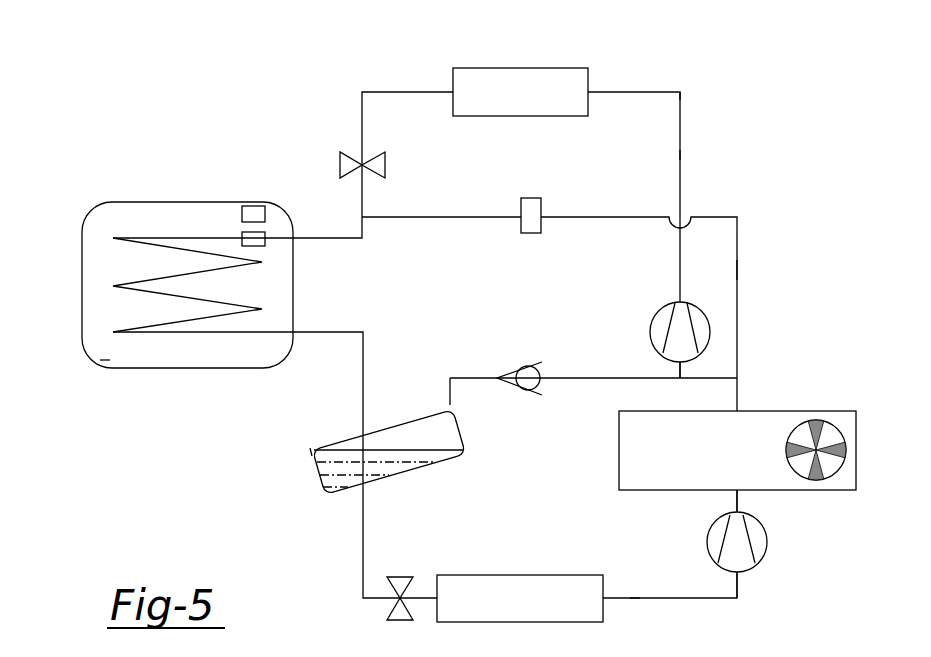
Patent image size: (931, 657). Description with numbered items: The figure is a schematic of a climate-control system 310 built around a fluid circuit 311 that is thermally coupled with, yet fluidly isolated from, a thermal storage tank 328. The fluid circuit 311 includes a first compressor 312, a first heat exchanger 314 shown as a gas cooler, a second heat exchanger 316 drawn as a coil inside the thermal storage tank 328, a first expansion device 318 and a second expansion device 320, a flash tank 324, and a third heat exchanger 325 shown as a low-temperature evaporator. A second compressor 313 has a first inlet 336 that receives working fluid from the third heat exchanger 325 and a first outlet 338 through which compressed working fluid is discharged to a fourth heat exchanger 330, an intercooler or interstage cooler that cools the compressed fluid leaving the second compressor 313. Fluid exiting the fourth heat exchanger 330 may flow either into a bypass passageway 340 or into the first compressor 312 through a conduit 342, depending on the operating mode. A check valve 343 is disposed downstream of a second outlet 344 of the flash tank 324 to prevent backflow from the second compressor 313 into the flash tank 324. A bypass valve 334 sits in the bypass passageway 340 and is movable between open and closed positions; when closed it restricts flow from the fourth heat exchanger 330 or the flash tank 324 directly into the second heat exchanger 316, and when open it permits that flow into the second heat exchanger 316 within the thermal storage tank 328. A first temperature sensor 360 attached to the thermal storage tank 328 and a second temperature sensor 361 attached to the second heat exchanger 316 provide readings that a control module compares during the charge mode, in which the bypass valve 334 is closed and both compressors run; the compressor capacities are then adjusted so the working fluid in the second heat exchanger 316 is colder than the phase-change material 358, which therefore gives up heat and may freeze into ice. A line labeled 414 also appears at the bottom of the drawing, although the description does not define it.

The climate-control system 310 is at (727, 65).
The fluid circuit 311 is at (693, 147).
The first compressor 312 is at (650, 330).
The second compressor 313 is at (768, 551).
The first heat exchanger 314 is at (520, 68).
The second heat exchanger 316 is at (170, 238).
The first expansion device 318 is at (338, 165).
The second expansion device 320 is at (400, 577).
The flash tank 324 is at (303, 455).
The third heat exchanger 325 is at (520, 575).
The thermal storage tank 328 is at (80, 196).
The fourth heat exchanger 330 is at (791, 411).
The bypass valve 334 is at (531, 198).
The first inlet 336 is at (737, 572).
The first outlet 338 is at (737, 512).
The bypass passageway 340 is at (752, 268).
The conduit 342 is at (680, 366).
The check valve 343 is at (518, 365).
The second outlet 344 is at (446, 406).
The phase-change material 358 is at (105, 358).
The first temperature sensor 360 is at (242, 214).
The second temperature sensor 361 is at (265, 239).
The refrigerant line 414 is at (631, 627).